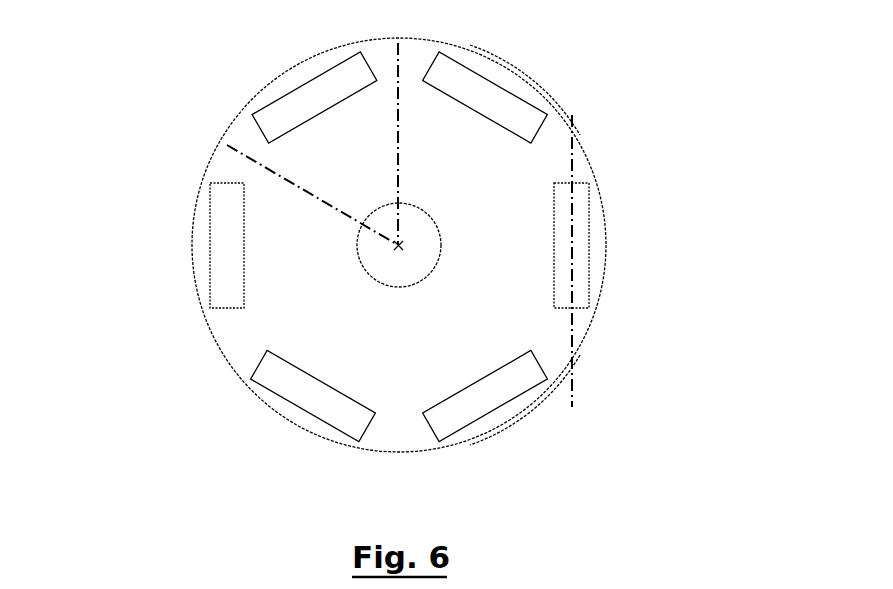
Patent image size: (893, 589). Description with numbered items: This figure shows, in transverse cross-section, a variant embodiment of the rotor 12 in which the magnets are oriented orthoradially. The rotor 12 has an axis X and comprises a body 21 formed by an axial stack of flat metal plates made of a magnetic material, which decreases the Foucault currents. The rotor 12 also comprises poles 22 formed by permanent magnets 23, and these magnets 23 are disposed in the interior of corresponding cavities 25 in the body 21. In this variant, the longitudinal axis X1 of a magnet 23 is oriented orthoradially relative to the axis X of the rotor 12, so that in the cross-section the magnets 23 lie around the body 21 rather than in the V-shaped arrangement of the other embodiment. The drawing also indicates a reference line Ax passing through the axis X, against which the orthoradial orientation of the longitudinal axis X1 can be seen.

The rotor 12 is at (391, 262).
The body 21 is at (323, 347).
The poles 22 is at (510, 57).
The permanent magnets 23 is at (224, 221).
The cavities 25 is at (520, 97).
The axis X is at (397, 247).
The longitudinal axis X1 is at (572, 163).
The axis line Ax is at (330, 135).